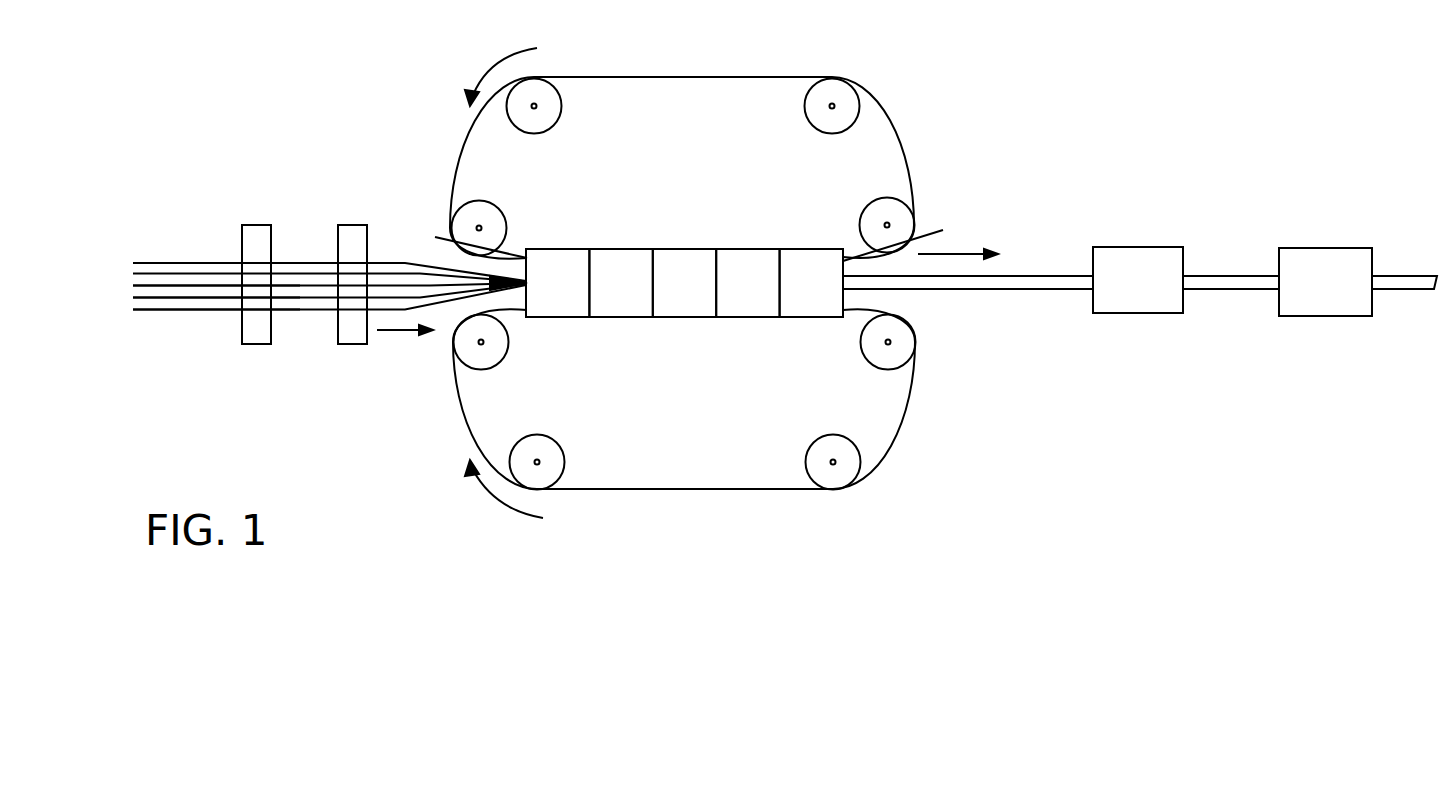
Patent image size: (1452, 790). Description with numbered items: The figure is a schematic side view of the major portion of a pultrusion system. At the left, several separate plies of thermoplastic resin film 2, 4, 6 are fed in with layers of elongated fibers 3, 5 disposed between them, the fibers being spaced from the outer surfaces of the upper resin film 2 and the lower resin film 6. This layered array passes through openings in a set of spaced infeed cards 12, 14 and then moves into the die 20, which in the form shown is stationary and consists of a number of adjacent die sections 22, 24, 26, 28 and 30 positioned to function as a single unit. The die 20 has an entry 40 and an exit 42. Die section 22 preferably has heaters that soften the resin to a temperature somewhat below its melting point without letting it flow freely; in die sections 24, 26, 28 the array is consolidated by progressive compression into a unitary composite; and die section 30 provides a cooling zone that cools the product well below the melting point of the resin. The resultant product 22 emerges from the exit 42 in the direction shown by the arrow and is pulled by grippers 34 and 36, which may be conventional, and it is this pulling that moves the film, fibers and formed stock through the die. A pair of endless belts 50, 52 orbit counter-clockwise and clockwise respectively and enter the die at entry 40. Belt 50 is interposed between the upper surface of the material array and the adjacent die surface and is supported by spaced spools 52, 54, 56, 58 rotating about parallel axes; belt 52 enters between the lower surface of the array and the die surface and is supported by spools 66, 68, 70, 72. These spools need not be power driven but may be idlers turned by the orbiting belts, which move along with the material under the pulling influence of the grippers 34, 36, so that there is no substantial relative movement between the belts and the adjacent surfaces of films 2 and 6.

The upper resin film 2 is at (192, 263).
The layer of elongated fibers 3 is at (157, 270).
The resin film 4 is at (188, 285).
The layer of elongated fibers 5 is at (163, 298).
The lower resin film 6 is at (198, 310).
The first guide plate 12 is at (258, 232).
The second guide plate 14 is at (365, 225).
The die 20 is at (763, 242).
The die section 22 is at (557, 305).
The die section 24 is at (613, 258).
The die section 26 is at (695, 258).
The die section 28 is at (765, 305).
The die section 30 is at (830, 303).
The gripper 34 is at (1157, 248).
The gripper 36 is at (1347, 252).
The die entry 40 is at (466, 240).
The die exit 42 is at (920, 239).
The endless belt 50 is at (759, 66).
The endless belt 52 is at (872, 210).
The spool 54 is at (818, 108).
The spool 56 is at (558, 103).
The spool 58 is at (495, 213).
The spool 66 is at (895, 357).
The spool 68 is at (817, 447).
The spool 70 is at (558, 457).
The spool 72 is at (490, 360).